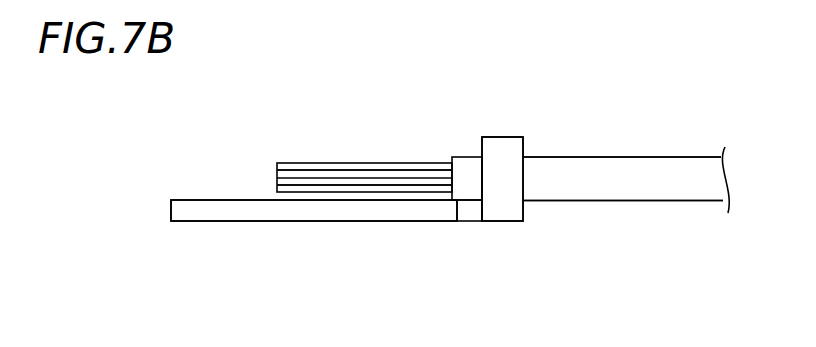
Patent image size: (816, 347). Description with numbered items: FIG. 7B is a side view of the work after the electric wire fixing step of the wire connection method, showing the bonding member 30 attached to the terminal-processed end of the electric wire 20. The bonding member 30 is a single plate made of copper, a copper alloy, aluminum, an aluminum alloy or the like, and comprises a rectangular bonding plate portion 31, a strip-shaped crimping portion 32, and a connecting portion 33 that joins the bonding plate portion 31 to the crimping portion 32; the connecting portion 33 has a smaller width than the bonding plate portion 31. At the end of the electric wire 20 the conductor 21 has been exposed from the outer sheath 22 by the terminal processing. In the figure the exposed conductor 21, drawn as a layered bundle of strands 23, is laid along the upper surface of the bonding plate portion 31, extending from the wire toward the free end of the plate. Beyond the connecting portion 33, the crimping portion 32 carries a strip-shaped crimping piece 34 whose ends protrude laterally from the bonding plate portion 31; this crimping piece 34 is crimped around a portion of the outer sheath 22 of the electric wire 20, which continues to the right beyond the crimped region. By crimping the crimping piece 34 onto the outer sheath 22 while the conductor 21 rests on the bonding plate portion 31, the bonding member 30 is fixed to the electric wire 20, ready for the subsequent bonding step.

The electric wire 20 is at (668, 157).
The conductor 21 is at (349, 163).
The outer sheath 22 is at (597, 162).
The layers of laminated body 23 is at (314, 172).
The bonding member 30 is at (365, 221).
The bonding plate portion 31 is at (277, 216).
The crimping portion 32 is at (505, 210).
The connecting portion 33 is at (475, 212).
The crimping piece 34 is at (503, 143).